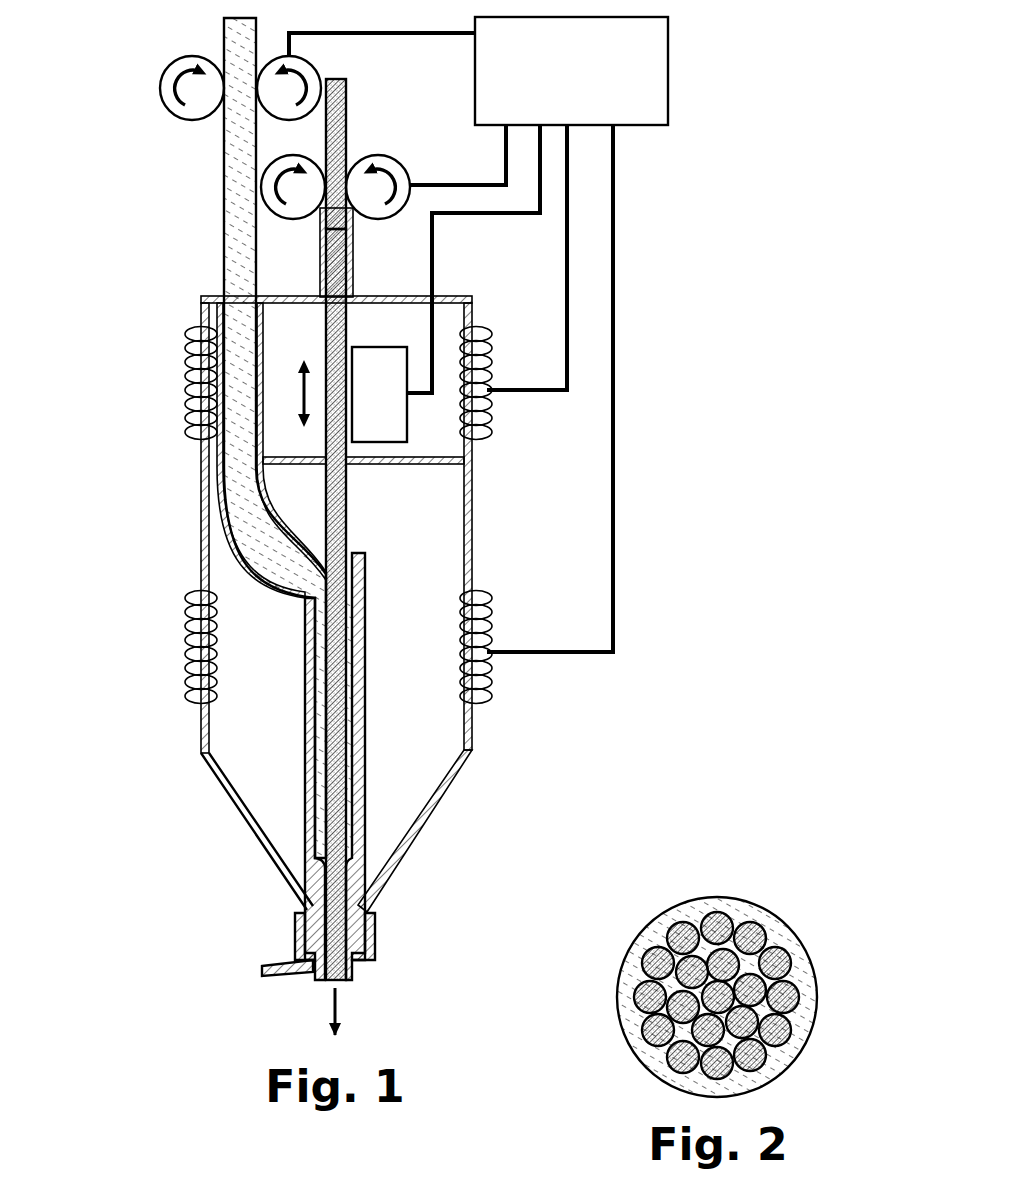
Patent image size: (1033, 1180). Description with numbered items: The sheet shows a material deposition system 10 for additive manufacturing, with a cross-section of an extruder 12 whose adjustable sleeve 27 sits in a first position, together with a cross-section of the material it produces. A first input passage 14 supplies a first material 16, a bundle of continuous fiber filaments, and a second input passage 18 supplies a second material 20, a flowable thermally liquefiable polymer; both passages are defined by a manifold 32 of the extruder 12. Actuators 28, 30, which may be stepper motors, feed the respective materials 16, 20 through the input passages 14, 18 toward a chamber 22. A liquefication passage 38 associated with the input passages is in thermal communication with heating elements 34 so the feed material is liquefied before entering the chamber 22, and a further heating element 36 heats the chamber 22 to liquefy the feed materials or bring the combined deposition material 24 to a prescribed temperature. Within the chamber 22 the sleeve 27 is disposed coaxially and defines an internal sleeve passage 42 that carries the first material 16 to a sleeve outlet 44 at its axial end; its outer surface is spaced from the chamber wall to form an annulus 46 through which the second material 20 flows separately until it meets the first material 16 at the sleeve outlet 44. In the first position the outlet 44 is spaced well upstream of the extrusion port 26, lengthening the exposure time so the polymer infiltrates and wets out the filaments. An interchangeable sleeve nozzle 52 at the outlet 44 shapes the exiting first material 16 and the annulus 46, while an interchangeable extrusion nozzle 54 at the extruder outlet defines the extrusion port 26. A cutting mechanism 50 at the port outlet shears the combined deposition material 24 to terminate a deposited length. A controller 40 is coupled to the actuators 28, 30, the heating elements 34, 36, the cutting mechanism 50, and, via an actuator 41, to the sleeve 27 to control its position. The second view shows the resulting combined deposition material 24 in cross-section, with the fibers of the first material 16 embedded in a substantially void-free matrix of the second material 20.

In FIG. 1, the material deposition system 10 is at (146, 62).
In FIG. 1, the extruder 12 is at (480, 297).
In FIG. 1, the first input passage 14 is at (352, 296).
In FIG. 1, the first material 16 is at (346, 93).
In FIG. 2, the first material 16 is at (768, 935).
In FIG. 1, the second input passage 18 is at (224, 292).
In FIG. 1, the second material 20 is at (224, 165).
In FIG. 2, the second material 20 is at (800, 1047).
In FIG. 1, the chamber 22 is at (308, 884).
In FIG. 1, the combined deposition material 24 is at (350, 978).
In FIG. 2, the combined deposition material 24 is at (650, 910).
In FIG. 1, the extrusion port 26 is at (353, 967).
In FIG. 1, the adjustable sleeve 27 is at (352, 738).
In FIG. 1, the actuator 28 is at (366, 157).
In FIG. 1, the actuator 30 is at (160, 88).
In FIG. 1, the manifold 32 is at (200, 313).
In FIG. 1, the heating element 34 is at (185, 388).
In FIG. 1, the heating element 36 is at (185, 640).
In FIG. 1, the liquefication passage 38 is at (243, 377).
In FIG. 1, the controller 40 is at (636, 113).
In FIG. 1, the actuator 41 is at (387, 422).
In FIG. 1, the internal sleeve passage 42 is at (349, 667).
In FIG. 1, the sleeve outlet 44 is at (360, 895).
In FIG. 1, the annulus 46 is at (315, 681).
In FIG. 1, the cutting mechanism 50 is at (283, 962).
In FIG. 1, the interchangeable sleeve nozzle 52 is at (352, 852).
In FIG. 1, the interchangeable extrusion nozzle 54 is at (375, 940).